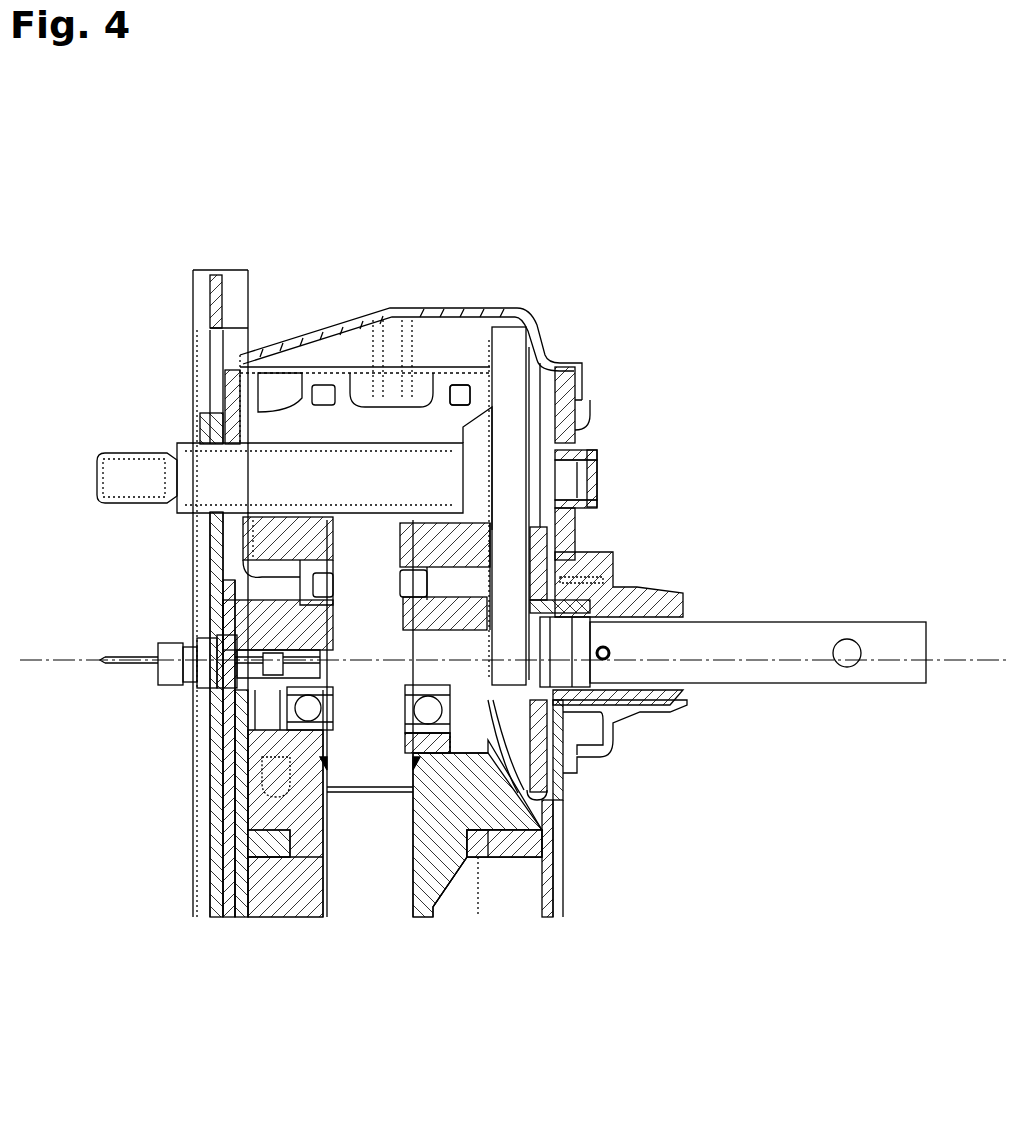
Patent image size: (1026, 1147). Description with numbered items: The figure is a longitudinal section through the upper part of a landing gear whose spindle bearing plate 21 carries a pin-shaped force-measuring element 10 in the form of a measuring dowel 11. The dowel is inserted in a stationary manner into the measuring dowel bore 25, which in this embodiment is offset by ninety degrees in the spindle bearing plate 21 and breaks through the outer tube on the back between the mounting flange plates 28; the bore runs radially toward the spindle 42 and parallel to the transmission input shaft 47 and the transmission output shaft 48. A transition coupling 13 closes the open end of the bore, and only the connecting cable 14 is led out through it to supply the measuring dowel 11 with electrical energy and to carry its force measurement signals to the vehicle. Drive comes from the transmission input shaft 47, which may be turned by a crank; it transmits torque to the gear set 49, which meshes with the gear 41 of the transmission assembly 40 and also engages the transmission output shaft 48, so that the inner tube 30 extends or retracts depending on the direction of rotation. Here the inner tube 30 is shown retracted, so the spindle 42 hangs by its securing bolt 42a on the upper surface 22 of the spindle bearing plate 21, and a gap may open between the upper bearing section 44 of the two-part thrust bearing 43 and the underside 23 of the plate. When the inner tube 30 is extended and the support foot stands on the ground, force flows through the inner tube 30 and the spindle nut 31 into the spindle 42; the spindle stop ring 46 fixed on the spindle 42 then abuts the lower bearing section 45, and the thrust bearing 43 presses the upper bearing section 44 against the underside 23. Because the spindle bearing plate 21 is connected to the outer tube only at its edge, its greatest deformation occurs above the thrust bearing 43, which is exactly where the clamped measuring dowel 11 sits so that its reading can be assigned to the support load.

The pin-shaped force-measuring element 10 is at (265, 655).
The measuring dowel 11 is at (278, 664).
The transition coupling 13 is at (203, 682).
The connecting cable 14 is at (133, 666).
The spindle bearing plate 21 is at (303, 650).
The upper surface 22 is at (443, 593).
The underside 23 is at (250, 687).
The measuring dowel bore 25 is at (258, 630).
The mounting flange plates 28 is at (198, 892).
The inner tube 30 is at (542, 888).
The spindle nut 31 is at (447, 888).
The transmission assembly 40 is at (322, 490).
The gear 41 is at (447, 523).
The spindle 42 is at (395, 718).
The securing bolt 42a is at (445, 525).
The thrust bearing 43 is at (464, 710).
The upper bearing section 44 is at (293, 693).
The lower bearing section 45 is at (300, 722).
The spindle stop ring 46 is at (427, 743).
The transmission input shaft 47 is at (806, 622).
The transmission output shaft 48 is at (150, 452).
The gear set 49 is at (483, 400).